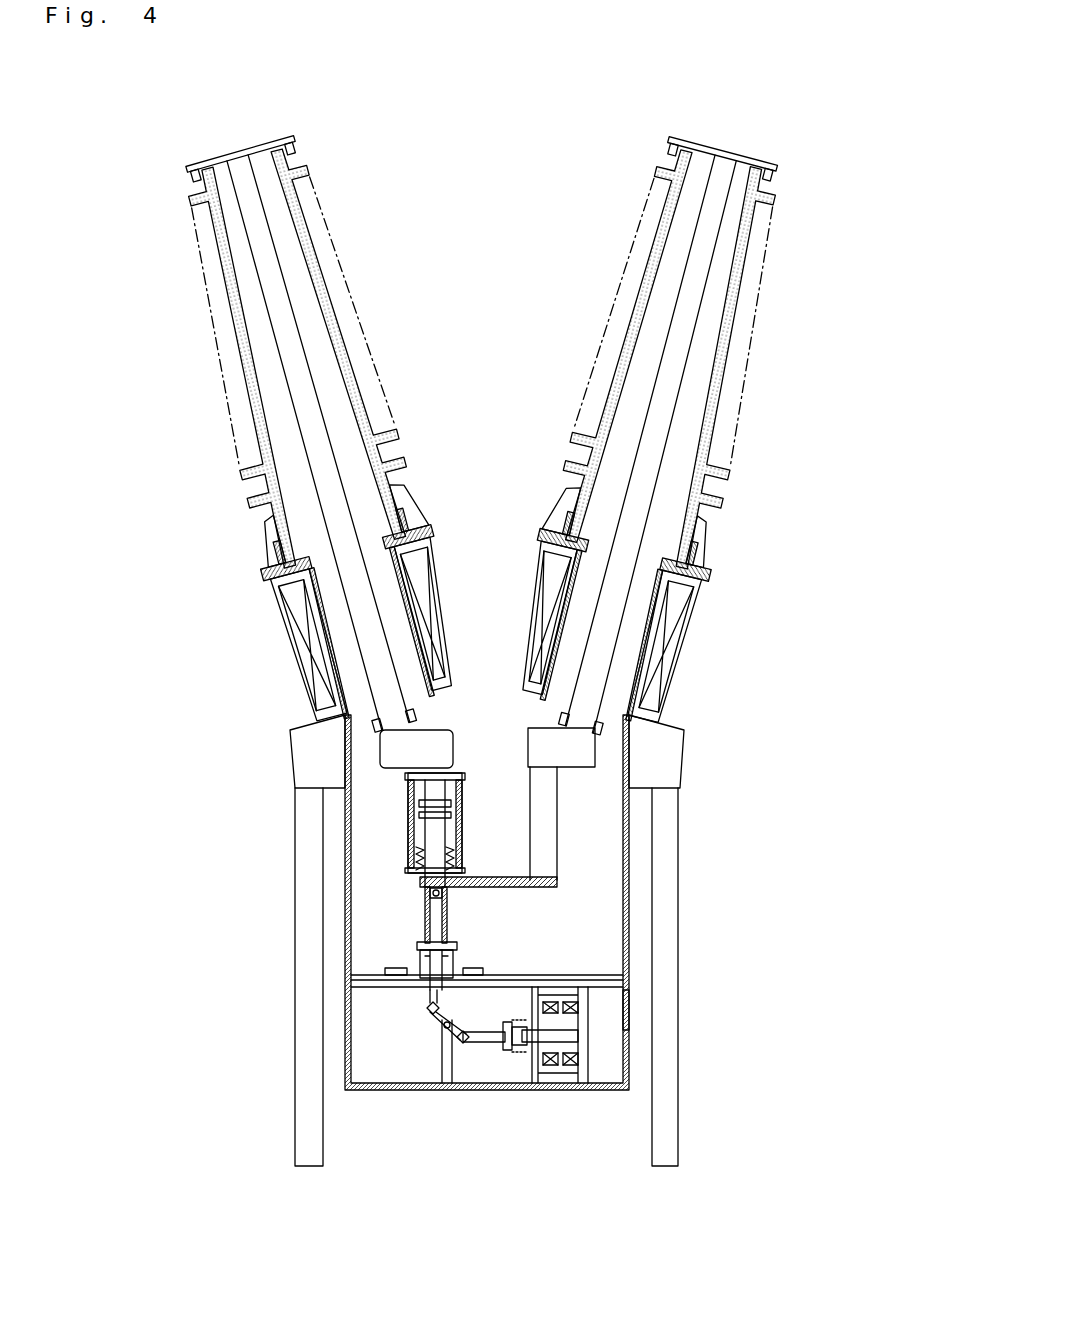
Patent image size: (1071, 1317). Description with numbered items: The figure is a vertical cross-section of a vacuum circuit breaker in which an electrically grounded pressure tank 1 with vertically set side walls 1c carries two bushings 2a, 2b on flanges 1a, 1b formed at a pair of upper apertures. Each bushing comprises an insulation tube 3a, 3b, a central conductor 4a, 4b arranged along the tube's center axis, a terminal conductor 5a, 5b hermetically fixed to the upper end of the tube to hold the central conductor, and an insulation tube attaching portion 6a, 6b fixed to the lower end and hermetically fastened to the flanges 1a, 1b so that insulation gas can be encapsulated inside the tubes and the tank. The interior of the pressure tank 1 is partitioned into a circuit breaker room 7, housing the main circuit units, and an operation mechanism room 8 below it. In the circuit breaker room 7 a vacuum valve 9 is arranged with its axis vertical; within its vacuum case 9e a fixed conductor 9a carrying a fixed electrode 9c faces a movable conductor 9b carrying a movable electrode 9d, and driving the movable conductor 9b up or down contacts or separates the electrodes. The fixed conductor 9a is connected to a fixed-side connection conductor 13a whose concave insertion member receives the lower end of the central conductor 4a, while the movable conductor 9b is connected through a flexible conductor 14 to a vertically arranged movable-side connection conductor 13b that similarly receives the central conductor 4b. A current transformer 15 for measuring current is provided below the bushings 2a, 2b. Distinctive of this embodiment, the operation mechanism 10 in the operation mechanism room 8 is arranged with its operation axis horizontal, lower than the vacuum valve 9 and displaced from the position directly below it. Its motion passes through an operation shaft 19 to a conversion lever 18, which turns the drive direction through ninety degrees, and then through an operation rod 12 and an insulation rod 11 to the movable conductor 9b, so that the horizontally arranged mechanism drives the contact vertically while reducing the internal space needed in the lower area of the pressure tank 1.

The pressure tank 1 is at (637, 944).
The flange 1a is at (268, 582).
The flange 1b is at (703, 582).
The side wall 1c is at (630, 1007).
The bushing 2a is at (192, 278).
The bushing 2b is at (770, 280).
The insulation tube 3a is at (240, 347).
The insulation tube 3b is at (727, 340).
The central conductor 4a is at (297, 413).
The central conductor 4b is at (673, 413).
The terminal conductor 5a is at (210, 160).
The terminal conductor 5b is at (753, 155).
The insulation tube attaching portion 6a is at (262, 564).
The insulation tube attaching portion 6b is at (703, 563).
The circuit breaker room 7 is at (597, 917).
The operation mechanism room 8 is at (610, 1043).
The vacuum valve 9 is at (388, 818).
The fixed conductor 9a is at (443, 790).
The movable conductor 9b is at (450, 852).
The fixed electrode 9c is at (452, 805).
The movable electrode 9d is at (452, 816).
The vacuum case 9e is at (408, 852).
The operation mechanism 10 is at (563, 1067).
The insulation rod 11 is at (423, 923).
The operation rod 12 is at (428, 992).
The fixed-side connection conductor 13a is at (392, 760).
The movable-side connection conductor 13b is at (558, 833).
The flexible conductor 14 is at (525, 888).
The current transformer 15 is at (680, 660).
The conversion lever 18 is at (437, 1018).
The operation shaft 19 is at (492, 1045).